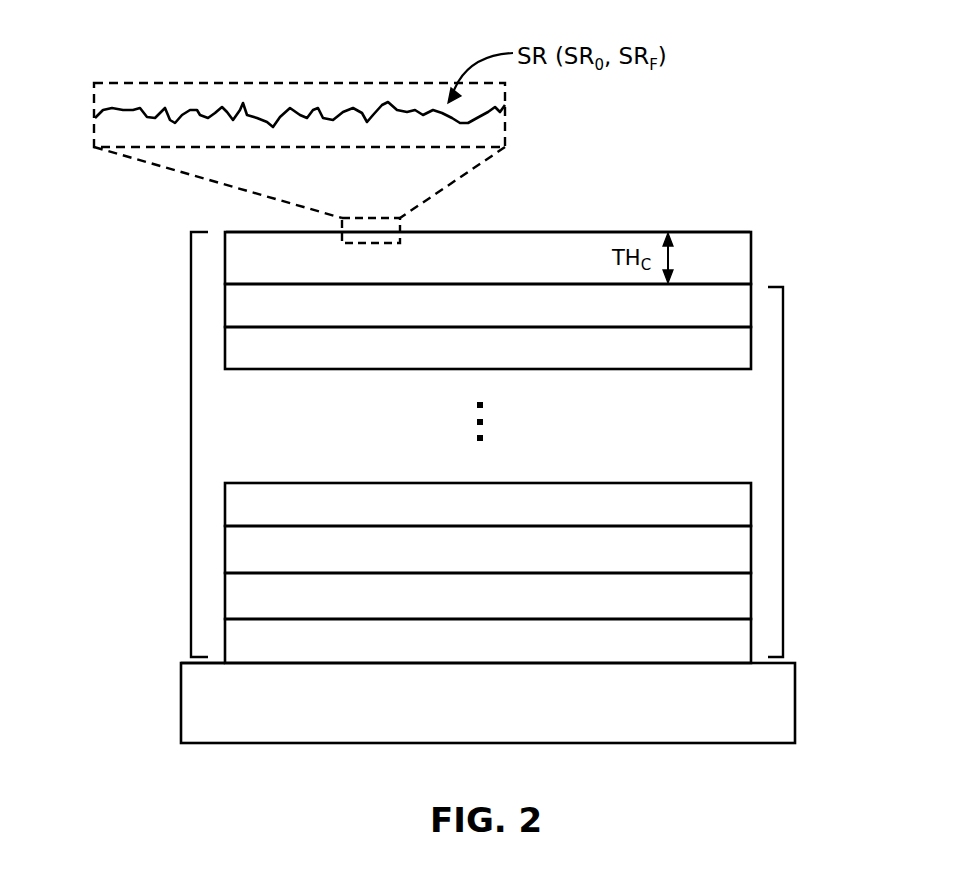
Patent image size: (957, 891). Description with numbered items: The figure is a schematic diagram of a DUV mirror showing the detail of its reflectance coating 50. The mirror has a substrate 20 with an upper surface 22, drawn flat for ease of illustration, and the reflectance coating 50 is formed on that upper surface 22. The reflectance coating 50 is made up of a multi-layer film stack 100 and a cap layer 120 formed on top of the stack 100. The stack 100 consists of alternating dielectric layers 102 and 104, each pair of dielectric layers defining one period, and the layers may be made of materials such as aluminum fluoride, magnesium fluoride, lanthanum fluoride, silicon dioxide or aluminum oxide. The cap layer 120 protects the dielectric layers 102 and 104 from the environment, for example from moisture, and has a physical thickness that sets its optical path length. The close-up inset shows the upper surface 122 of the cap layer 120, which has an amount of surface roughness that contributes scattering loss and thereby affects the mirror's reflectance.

The upper surface 122 is at (140, 108).
The cap layer 120 is at (485, 266).
The dielectric layer 104 is at (485, 314).
The dielectric layer 102 is at (485, 357).
The multi-layer film stack 100 is at (783, 470).
The reflectance coating 50 is at (191, 440).
The upper surface 22 is at (187, 662).
The substrate 20 is at (180, 710).